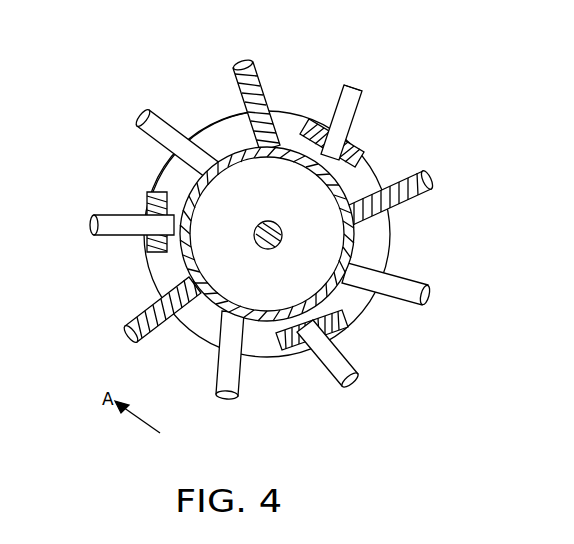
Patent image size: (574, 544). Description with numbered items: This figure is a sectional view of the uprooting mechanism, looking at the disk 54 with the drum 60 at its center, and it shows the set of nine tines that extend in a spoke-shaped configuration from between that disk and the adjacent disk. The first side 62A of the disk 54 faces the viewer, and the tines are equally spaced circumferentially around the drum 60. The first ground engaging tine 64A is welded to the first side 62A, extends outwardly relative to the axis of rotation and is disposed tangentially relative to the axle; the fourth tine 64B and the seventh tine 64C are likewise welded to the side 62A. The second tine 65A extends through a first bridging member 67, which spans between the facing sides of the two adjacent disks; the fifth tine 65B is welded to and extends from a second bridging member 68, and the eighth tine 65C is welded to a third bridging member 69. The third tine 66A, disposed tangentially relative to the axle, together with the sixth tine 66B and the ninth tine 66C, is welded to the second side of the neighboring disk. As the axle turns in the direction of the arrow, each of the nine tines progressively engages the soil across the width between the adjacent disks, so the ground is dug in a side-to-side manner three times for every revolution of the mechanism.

The disk 54 is at (215, 118).
The drum 60 is at (265, 322).
The first side of the disk 62A is at (373, 178).
The first ground engaging tine 64A is at (138, 112).
The fourth tine 64B is at (239, 398).
The seventh tine 64C is at (433, 188).
The second tine 65A is at (123, 213).
The fifth tine 65B is at (357, 370).
The eighth tine 65C is at (358, 113).
The third tine 66A is at (166, 313).
The sixth tine 66B is at (423, 278).
The ninth tine 66C is at (257, 73).
The first bridging member 67 is at (150, 243).
The second bridging member 68 is at (350, 340).
The third bridging member 69 is at (313, 125).